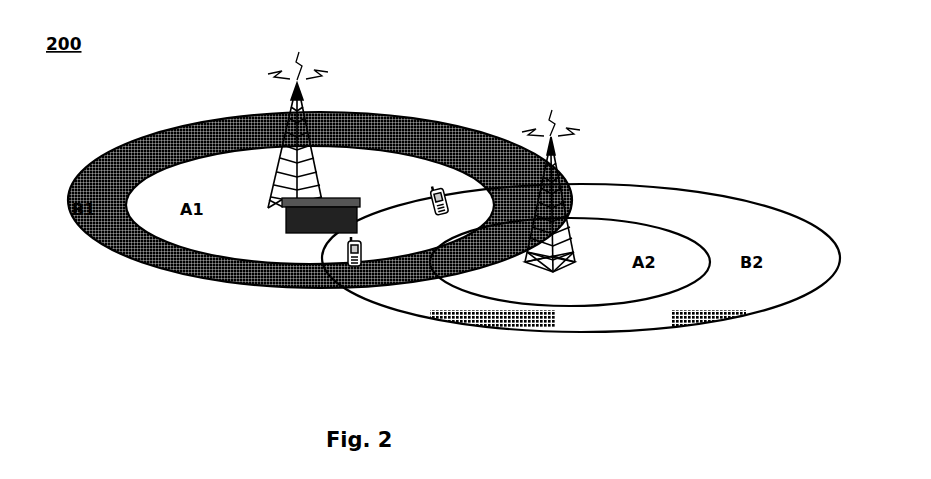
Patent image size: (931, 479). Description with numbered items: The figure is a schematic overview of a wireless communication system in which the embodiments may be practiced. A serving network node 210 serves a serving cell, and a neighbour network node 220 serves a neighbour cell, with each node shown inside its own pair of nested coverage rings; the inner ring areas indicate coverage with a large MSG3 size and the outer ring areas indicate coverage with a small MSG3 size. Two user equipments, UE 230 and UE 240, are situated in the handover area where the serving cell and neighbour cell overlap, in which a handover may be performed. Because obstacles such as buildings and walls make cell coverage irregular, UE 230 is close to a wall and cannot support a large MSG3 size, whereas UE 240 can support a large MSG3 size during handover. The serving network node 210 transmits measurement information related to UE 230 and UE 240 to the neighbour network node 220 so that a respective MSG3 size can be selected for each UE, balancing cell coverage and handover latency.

The serving network node 210 is at (305, 102).
The neighbour network node 220 is at (560, 167).
The user equipment 230 is at (360, 238).
The user equipment 240 is at (447, 190).